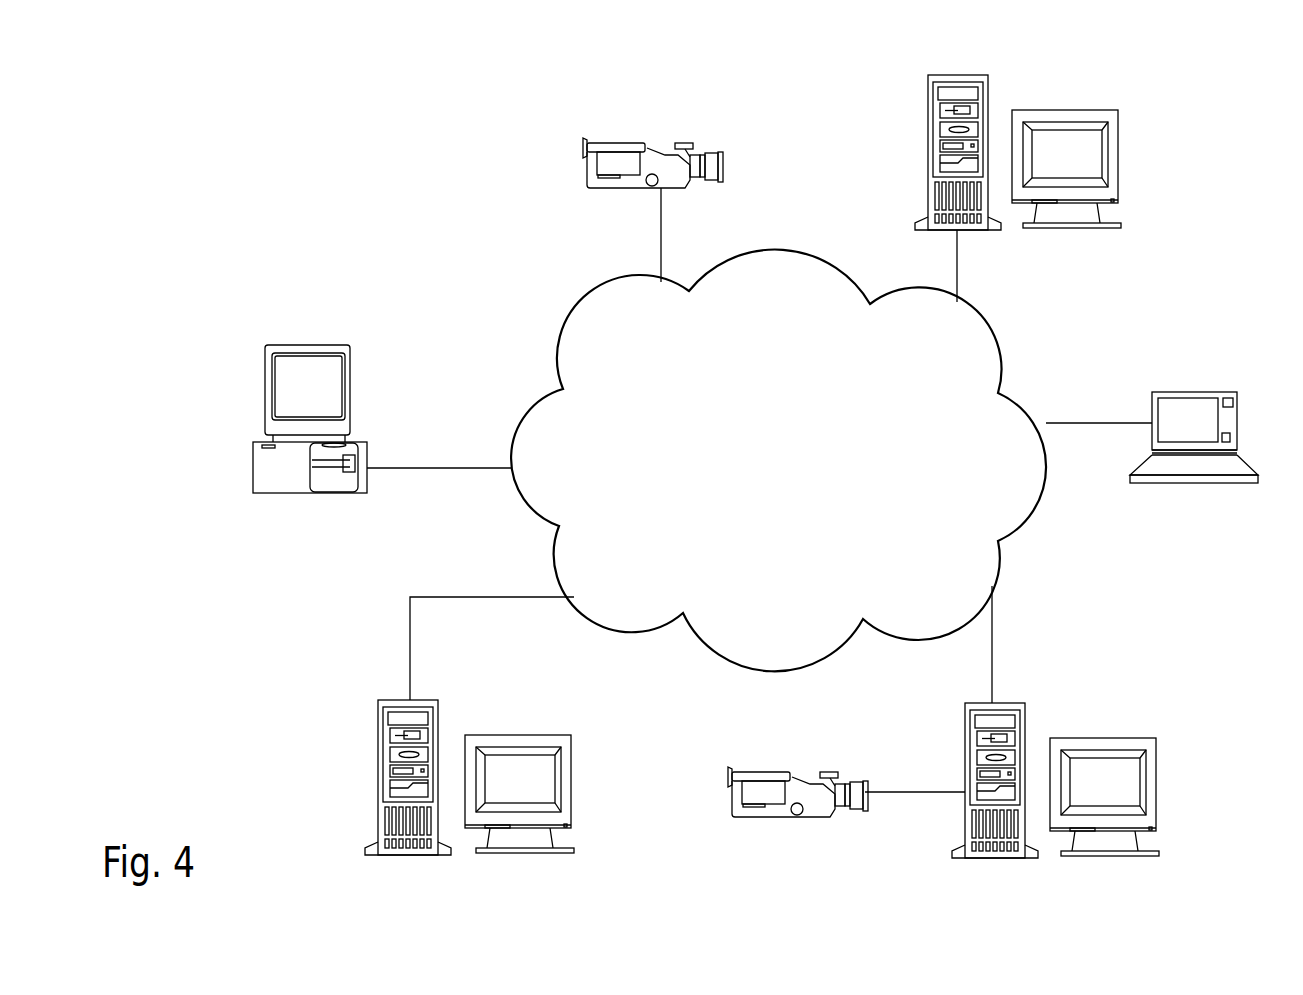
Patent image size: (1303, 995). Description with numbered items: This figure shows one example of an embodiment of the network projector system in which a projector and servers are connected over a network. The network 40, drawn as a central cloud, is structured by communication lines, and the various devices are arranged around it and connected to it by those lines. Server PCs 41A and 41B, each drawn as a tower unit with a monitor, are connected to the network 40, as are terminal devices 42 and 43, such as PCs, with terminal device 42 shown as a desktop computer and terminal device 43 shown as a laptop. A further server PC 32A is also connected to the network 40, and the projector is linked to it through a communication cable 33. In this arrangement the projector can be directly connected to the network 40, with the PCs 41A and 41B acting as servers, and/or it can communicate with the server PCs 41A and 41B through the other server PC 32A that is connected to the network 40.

The server PC 32A is at (1100, 738).
The communication cable 33 is at (888, 792).
The network 40 is at (985, 328).
The server PC 41A is at (1063, 110).
The server PC 41B is at (515, 735).
The terminal device 42 is at (328, 345).
The terminal device 43 is at (1227, 423).